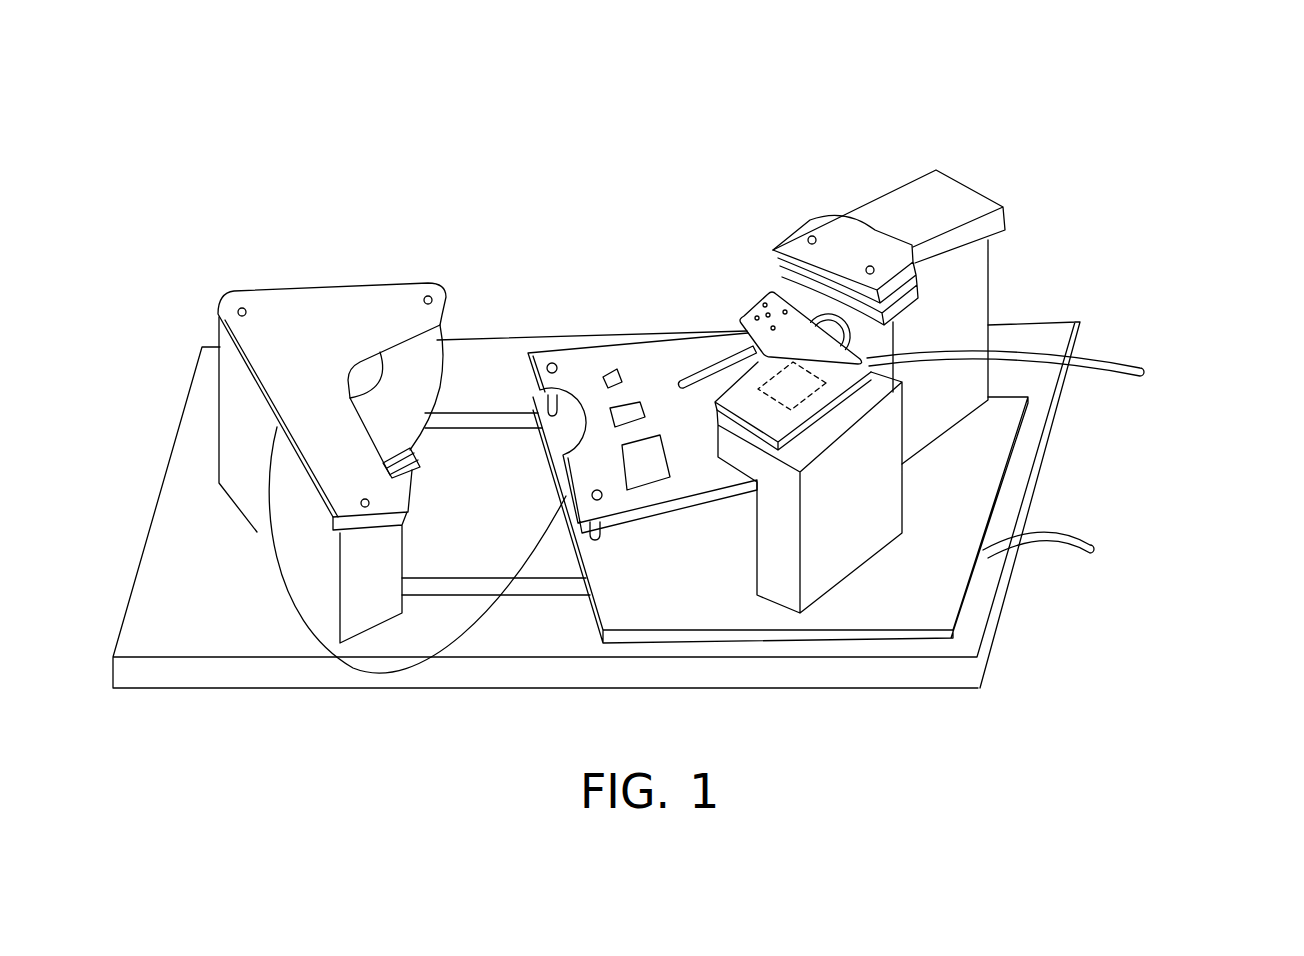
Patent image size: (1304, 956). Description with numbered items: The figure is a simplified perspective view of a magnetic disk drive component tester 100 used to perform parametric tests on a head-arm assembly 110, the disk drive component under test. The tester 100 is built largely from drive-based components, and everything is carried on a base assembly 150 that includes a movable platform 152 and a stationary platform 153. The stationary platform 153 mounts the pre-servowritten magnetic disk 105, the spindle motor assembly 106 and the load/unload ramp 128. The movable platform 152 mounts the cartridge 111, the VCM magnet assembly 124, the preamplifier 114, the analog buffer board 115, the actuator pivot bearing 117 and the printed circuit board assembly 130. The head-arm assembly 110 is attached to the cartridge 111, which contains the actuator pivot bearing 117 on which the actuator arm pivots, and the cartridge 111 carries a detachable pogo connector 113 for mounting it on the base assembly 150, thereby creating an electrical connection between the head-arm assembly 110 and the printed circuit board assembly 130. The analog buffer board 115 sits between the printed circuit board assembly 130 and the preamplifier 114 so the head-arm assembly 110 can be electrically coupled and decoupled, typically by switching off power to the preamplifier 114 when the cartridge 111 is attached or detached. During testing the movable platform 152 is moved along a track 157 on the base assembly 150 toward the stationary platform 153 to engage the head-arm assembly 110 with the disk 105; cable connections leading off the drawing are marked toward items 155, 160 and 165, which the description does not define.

The magnetic disk drive component tester 100 is at (580, 113).
The pre-servowritten magnetic disk 105 is at (446, 346).
The spindle motor assembly 106 is at (296, 308).
The head-arm assembly 110 is at (700, 362).
The cartridge 111 is at (743, 283).
The pogo connector 113 is at (766, 361).
The preamplifier 114 is at (800, 219).
The analog buffer board 115 is at (800, 235).
The actuator pivot bearing 117 is at (759, 275).
The VCM magnet assembly 124 is at (808, 222).
The load/unload ramp 128 is at (398, 445).
The printed circuit board assembly 130 is at (587, 347).
The base assembly 150 is at (139, 492).
The movable platform 152 is at (1008, 480).
The stationary platform 153 is at (218, 413).
The power source 155 is at (1100, 559).
The track 157 is at (482, 578).
The controller 160 is at (1081, 389).
The display 165 is at (1150, 373).